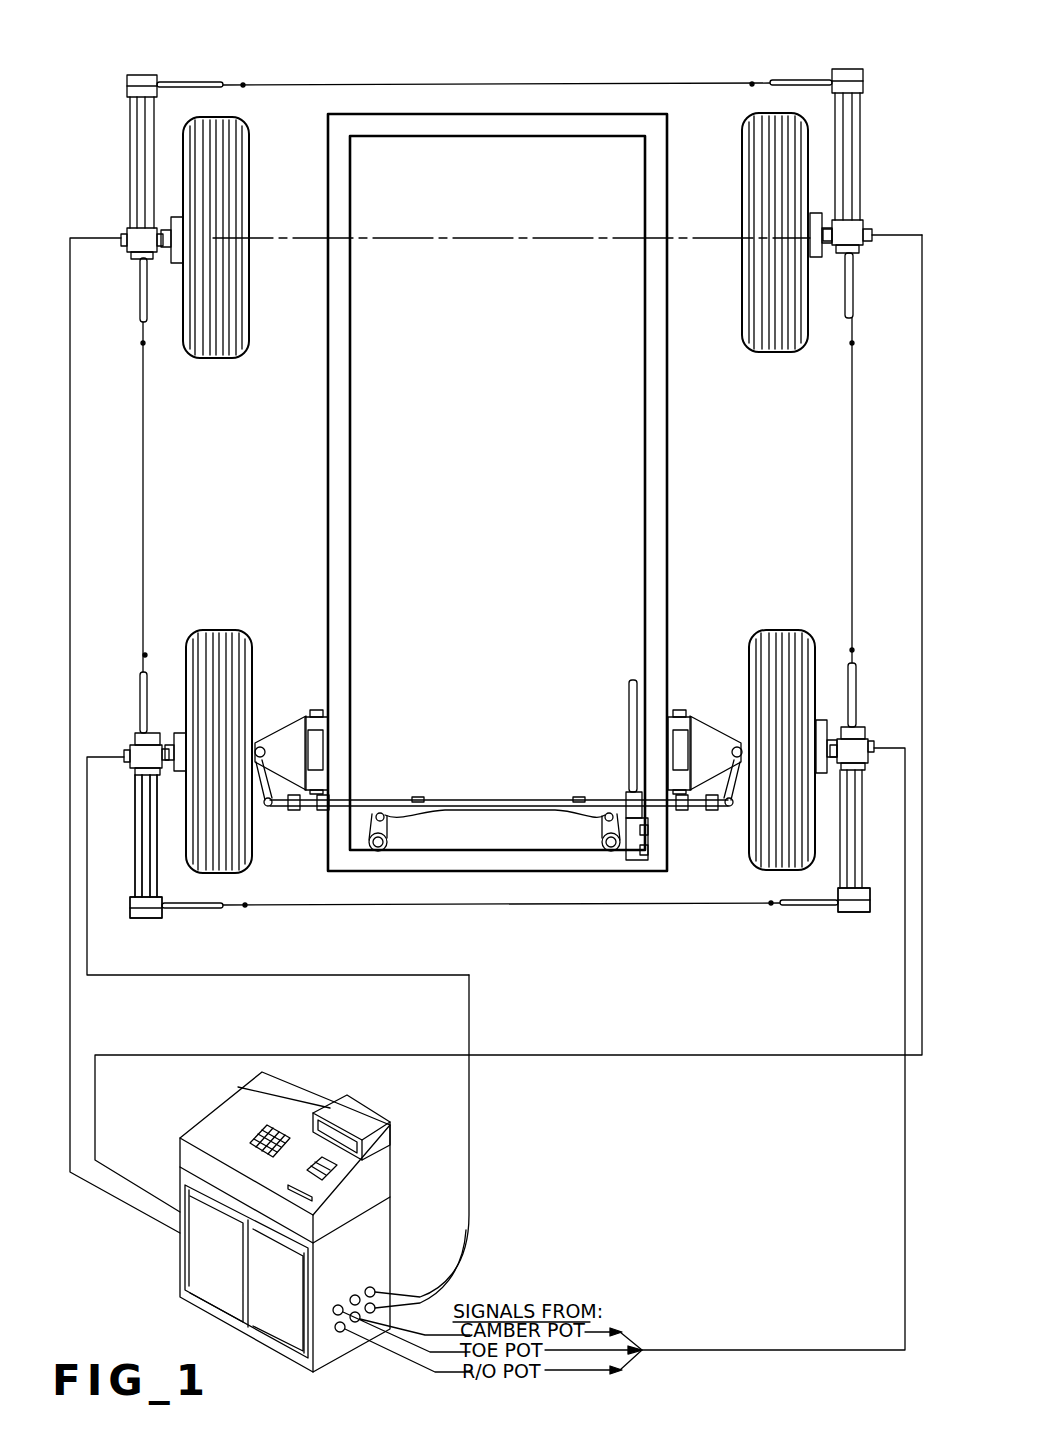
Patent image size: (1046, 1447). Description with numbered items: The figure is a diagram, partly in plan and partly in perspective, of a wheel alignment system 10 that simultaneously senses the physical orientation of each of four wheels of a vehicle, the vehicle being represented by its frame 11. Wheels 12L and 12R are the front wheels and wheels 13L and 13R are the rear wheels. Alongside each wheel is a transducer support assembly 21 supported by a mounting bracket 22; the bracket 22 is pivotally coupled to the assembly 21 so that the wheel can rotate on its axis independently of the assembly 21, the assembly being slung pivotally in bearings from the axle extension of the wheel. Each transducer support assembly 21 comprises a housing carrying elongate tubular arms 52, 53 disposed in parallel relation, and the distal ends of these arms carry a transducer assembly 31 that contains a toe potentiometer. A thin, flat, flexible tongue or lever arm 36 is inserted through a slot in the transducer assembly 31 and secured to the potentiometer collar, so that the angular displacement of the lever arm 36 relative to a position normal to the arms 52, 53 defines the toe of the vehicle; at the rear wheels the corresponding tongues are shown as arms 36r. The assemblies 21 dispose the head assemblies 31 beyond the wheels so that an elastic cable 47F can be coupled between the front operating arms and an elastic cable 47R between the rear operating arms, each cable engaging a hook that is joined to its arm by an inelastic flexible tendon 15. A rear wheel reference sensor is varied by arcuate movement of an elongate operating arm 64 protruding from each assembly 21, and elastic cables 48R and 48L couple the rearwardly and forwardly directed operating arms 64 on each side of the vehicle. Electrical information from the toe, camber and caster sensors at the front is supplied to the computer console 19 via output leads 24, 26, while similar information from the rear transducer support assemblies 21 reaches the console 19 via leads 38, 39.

The wheel alignment system 10 is at (66, 128).
The frame 11 is at (347, 345).
The front wheel 12R is at (233, 631).
The front wheel 12L is at (768, 631).
The rear wheel 13R is at (216, 358).
The rear wheel 13L is at (760, 352).
The inelastic flexible tendon 15 is at (238, 88).
The computer console 19 is at (363, 1232).
The transducer support assembly 21 is at (116, 260).
The mounting bracket 22 is at (176, 264).
The output lead 24 is at (887, 748).
The output lead 26 is at (470, 1020).
The transducer assembly 31 is at (143, 921).
The lever arm 36 is at (192, 909).
The rear connecting bar 36r is at (184, 82).
The lead 38 is at (922, 470).
The lead 39 is at (83, 238).
The cable 47R is at (630, 83).
The cable 47F is at (288, 907).
The elastic cable 48R is at (146, 497).
The elastic cable 48L is at (850, 487).
The elongate tubular arm 52 is at (152, 848).
The elongate tubular arm 53 is at (138, 860).
The operating arm 64 is at (141, 296).